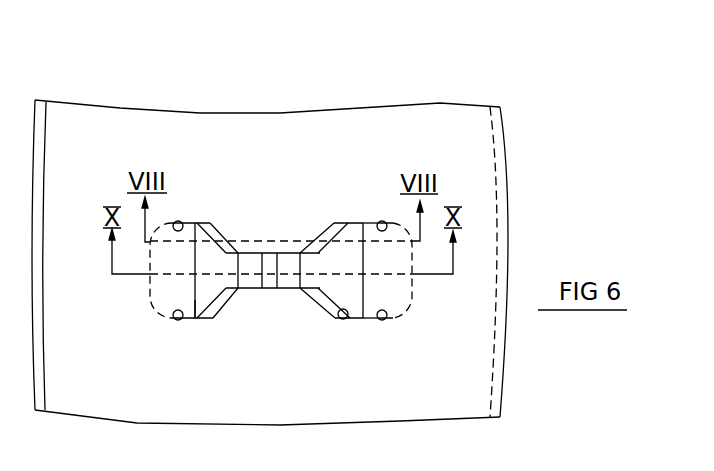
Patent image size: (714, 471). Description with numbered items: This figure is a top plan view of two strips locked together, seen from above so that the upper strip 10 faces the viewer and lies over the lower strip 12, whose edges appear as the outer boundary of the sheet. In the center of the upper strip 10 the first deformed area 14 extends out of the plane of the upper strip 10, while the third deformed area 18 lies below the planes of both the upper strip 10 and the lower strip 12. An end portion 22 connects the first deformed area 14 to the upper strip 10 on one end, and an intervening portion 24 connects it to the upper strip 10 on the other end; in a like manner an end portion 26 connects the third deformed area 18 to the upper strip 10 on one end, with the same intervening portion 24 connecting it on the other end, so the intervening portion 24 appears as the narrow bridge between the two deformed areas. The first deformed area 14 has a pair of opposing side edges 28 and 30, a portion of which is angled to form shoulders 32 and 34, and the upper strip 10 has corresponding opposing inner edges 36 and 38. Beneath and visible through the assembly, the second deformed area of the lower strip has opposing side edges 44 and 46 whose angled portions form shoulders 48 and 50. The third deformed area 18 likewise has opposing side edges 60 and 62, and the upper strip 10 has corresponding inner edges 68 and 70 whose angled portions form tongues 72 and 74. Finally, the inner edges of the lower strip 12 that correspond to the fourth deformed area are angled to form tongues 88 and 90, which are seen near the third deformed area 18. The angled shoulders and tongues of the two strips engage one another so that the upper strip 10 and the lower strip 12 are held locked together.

The upper strip 10 is at (283, 150).
The lower strip 12 is at (40, 100).
The first deformed area 14 is at (338, 302).
The third deformed area 18 is at (198, 298).
The end portion 22 is at (395, 302).
The intervening portion 24 is at (265, 289).
The end portion 26 is at (185, 299).
The side edge 28 is at (385, 225).
The side edge 30 is at (383, 320).
The shoulder 32 is at (335, 224).
The shoulder 34 is at (343, 320).
The inner edge 36 is at (370, 223).
The inner edge 38 is at (367, 320).
The side edge 44 is at (348, 223).
The side edge 46 is at (337, 320).
The shoulder 48 is at (322, 240).
The shoulder 50 is at (317, 313).
The side edge 60 is at (175, 222).
The side edge 62 is at (172, 319).
The inner edge 68 is at (195, 223).
The inner edge 70 is at (193, 319).
The tongue 72 is at (228, 236).
The tongue 74 is at (233, 296).
The tongue 88 is at (216, 236).
The tongue 90 is at (210, 307).